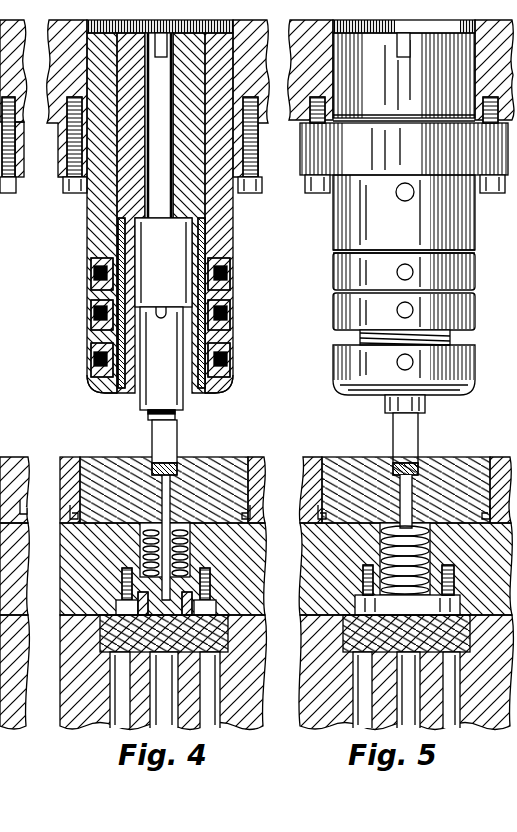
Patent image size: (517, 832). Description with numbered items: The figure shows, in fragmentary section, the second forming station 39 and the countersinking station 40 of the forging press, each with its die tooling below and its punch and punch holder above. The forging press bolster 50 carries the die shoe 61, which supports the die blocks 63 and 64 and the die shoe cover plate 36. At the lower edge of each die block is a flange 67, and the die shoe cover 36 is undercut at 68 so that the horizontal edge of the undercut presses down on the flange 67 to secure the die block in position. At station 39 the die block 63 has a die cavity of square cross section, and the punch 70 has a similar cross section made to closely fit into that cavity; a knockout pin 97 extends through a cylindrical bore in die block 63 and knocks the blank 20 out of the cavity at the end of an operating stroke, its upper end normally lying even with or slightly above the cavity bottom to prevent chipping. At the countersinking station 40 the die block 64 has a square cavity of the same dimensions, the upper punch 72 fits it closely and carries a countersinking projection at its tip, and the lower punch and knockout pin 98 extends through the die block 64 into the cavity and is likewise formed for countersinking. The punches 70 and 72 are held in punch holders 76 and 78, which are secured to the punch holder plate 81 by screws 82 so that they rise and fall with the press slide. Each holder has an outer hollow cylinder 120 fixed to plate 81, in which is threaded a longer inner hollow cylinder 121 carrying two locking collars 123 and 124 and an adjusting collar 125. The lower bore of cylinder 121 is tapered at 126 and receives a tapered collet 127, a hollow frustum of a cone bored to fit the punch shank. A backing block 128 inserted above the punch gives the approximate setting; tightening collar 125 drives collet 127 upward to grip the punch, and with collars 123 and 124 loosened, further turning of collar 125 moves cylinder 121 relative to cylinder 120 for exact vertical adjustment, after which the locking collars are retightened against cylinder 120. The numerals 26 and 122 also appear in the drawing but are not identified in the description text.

In FIG. 4, the slug 20 is at (151, 470).
In FIG. 5, the slug 20 is at (393, 470).
In FIG. 4, the adjacent die station 26 is at (22, 466).
In FIG. 5, the die shoe cover plate 36 is at (300, 457).
In FIG. 4, the second forming station 39 is at (186, 457).
In FIG. 5, the third forming or countersinking station 40 is at (426, 458).
In FIG. 4, the forging press bolster 50 is at (60, 679).
In FIG. 4, the die shoe 61 is at (254, 577).
In FIG. 4, the die block 63 is at (134, 457).
In FIG. 5, the die block 64 is at (368, 456).
In FIG. 4, the flange 67 is at (63, 521).
In FIG. 5, the flange 67 is at (303, 535).
In FIG. 5, the undercut 68 is at (320, 503).
In FIG. 4, the punch 70 is at (177, 437).
In FIG. 5, the upper punch 72 is at (400, 425).
In FIG. 4, the punch holder 76 is at (113, 396).
In FIG. 5, the punch holder 78 is at (459, 400).
In FIG. 5, the punch holder plate 81 is at (303, 121).
In FIG. 5, the screws 82 is at (315, 192).
In FIG. 4, the knockout pin 97 is at (172, 501).
In FIG. 5, the lower punch and knockout pin 98 is at (418, 501).
In FIG. 4, the outer hollow cylinder 120 is at (0, 216).
In FIG. 5, the outer hollow cylinder 120 is at (340, 218).
In FIG. 4, the inner hollow cylinder 121 is at (115, 221).
In FIG. 5, the ring 122 is at (465, 276).
In FIG. 4, the locking collar 123 is at (91, 284).
In FIG. 4, the locking collar 124 is at (91, 325).
In FIG. 5, the locking collar 124 is at (462, 313).
In FIG. 4, the adjusting collar 125 is at (91, 378).
In FIG. 5, the adjusting collar 125 is at (478, 370).
In FIG. 4, the tapered lower bore portion 126 is at (91, 350).
In FIG. 4, the tapered collet 127 is at (232, 366).
In FIG. 4, the backing block 128 is at (180, 272).